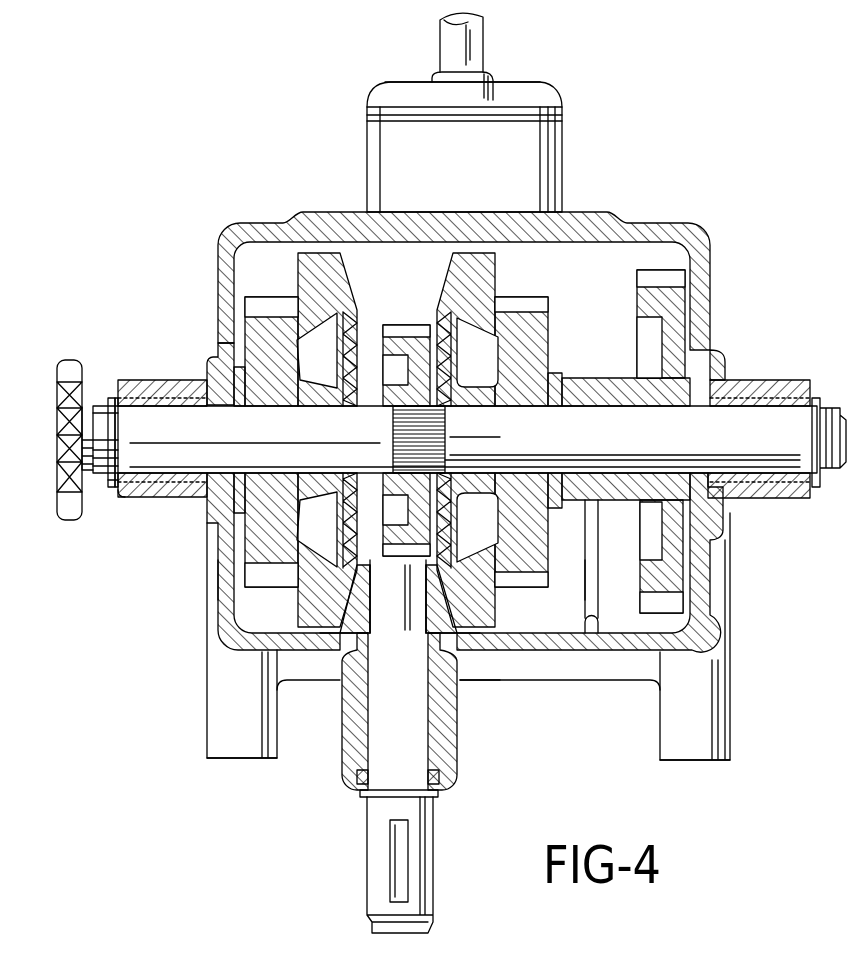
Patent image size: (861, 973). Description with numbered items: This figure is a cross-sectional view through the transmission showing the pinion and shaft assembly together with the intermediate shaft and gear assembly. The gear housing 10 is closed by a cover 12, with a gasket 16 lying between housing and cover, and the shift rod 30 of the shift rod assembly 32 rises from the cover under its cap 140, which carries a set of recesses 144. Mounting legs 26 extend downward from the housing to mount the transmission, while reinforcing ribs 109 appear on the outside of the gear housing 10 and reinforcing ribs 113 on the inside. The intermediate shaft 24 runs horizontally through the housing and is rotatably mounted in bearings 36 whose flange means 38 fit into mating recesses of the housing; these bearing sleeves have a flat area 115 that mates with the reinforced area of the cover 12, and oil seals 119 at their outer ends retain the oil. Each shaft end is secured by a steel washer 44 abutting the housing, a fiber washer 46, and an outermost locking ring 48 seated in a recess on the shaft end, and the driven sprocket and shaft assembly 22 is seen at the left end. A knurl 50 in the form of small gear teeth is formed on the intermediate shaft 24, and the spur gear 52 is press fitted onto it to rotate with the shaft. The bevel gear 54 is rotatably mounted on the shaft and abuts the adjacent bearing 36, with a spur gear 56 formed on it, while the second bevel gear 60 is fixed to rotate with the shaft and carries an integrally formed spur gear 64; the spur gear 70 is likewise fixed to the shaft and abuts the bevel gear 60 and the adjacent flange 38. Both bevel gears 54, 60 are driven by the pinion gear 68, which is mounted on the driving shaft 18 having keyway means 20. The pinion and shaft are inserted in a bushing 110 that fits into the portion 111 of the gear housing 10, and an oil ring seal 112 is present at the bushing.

The gear housing 10 is at (218, 575).
The cover 12 is at (712, 270).
The gasket 16 is at (145, 378).
The driving shaft 18 is at (433, 900).
The keyway means 20 is at (400, 850).
The driven sprocket and shaft assembly 22 is at (57, 390).
The intermediate shaft 24 is at (780, 410).
The mounting legs 26 is at (207, 720).
The shift rod 30 is at (483, 45).
The shift rod assembly 32 is at (562, 150).
The bearings 36 is at (150, 497).
The flange means 38 is at (222, 355).
The steel washer 44 is at (116, 398).
The fiber washer 46 is at (108, 400).
The locking ring 48 is at (110, 487).
The knurl 50 is at (445, 433).
The spur gear 52 is at (397, 323).
The bevel gear 54 is at (345, 268).
The spur gear 56 is at (262, 297).
The second bevel gear 60 is at (447, 262).
The spur gear 64 is at (525, 297).
The pinion gear 68 is at (452, 608).
The spur gear 70 is at (637, 287).
The reinforcing ribs 109 is at (577, 680).
The bushing 110 is at (445, 758).
The portion of gear housing 111 is at (340, 790).
The oil ring seal 112 is at (440, 778).
The reinforcing ribs 113 is at (598, 615).
The flat area 115 is at (160, 380).
The oil seals 119 is at (120, 497).
The cap 140 is at (555, 93).
The recesses 144 is at (493, 92).